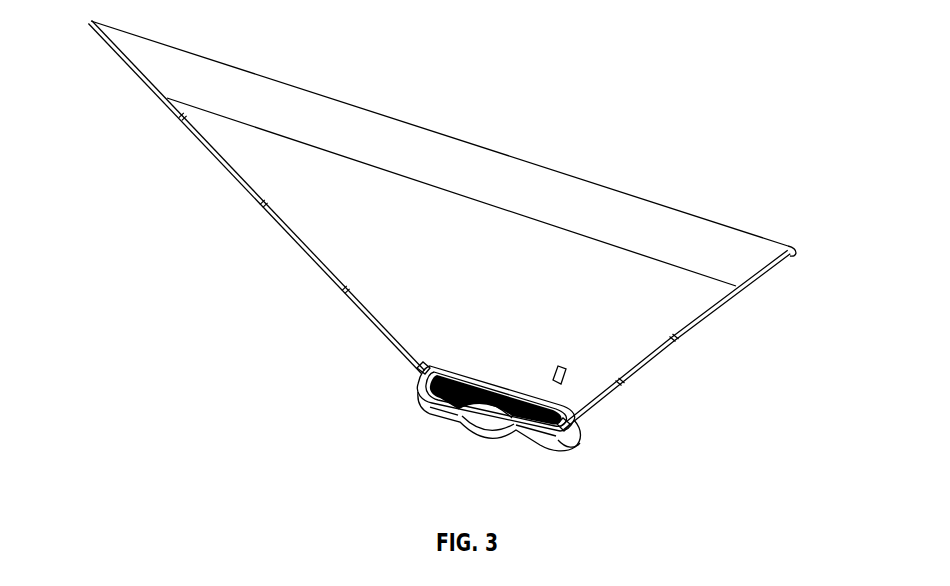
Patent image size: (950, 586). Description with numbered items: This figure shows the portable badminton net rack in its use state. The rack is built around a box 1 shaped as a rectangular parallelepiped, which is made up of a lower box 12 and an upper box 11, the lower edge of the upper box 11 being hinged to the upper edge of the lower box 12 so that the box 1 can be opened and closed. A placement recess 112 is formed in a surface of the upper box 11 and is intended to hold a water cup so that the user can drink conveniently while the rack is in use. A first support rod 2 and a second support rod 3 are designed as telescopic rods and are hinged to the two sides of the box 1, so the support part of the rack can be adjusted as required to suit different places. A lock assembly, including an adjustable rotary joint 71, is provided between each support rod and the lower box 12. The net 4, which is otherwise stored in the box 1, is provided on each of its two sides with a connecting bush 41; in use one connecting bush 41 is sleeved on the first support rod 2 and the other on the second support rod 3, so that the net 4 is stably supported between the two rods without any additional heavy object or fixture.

The box 1 is at (453, 408).
The upper box 11 is at (420, 388).
The lower box 12 is at (428, 420).
The placement recess 112 is at (563, 368).
The first support rod 2 is at (665, 355).
The second support rod 3 is at (322, 270).
The net 4 is at (636, 204).
The connecting bush 41 is at (797, 258).
The adjustable rotary joint 71 is at (577, 441).